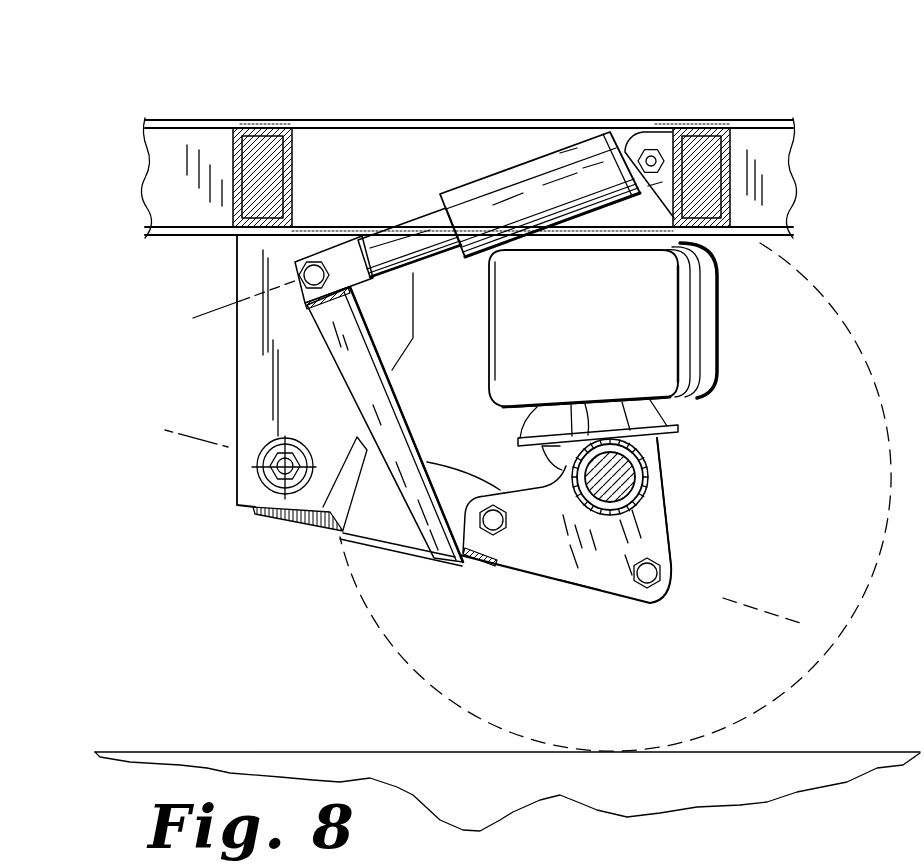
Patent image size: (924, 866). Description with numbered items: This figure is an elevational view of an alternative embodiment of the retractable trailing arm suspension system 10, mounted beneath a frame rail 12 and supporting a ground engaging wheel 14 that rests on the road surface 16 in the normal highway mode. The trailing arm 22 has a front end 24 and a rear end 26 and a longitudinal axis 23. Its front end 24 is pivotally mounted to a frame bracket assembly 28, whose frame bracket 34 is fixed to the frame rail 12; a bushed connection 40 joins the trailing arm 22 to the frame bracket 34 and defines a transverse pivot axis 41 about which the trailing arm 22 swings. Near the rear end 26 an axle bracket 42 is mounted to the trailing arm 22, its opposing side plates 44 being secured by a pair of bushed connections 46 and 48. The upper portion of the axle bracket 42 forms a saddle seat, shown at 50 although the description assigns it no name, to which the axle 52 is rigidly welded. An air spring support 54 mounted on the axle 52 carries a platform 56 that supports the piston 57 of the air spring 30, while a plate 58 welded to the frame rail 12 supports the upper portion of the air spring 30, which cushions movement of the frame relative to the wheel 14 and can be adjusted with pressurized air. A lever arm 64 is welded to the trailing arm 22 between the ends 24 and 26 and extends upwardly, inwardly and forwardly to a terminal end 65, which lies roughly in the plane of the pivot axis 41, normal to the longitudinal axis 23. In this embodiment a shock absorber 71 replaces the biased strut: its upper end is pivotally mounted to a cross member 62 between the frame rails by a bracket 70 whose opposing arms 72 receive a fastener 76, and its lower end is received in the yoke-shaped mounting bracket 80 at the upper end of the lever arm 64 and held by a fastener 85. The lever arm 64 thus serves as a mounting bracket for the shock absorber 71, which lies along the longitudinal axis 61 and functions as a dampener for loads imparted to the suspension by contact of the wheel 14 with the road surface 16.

The trailing arm suspension system 10 is at (82, 235).
The frame rail 12 is at (293, 113).
The ground engaging wheel 14 is at (815, 228).
The road surface 16 is at (797, 751).
The trailing arm 22 is at (453, 453).
The longitudinal axis of the trailing arm 23 is at (186, 440).
The front end 24 is at (273, 527).
The rear end 26 is at (590, 598).
The frame bracket assembly 28 is at (197, 421).
The air spring 30 is at (732, 320).
The frame bracket 34 is at (226, 386).
The bushed connection 40 is at (290, 443).
The pivot axis 41 is at (297, 470).
The axle bracket 42 is at (682, 547).
The side plates 44 is at (578, 590).
The bushed connection 46 is at (497, 563).
The bushed connection 48 is at (664, 588).
The bearing ring 50 is at (648, 518).
The axle 52 is at (646, 496).
The air spring support 54 is at (683, 458).
The platform 56 is at (577, 438).
The piston 57 is at (678, 421).
The plate 58 is at (708, 242).
The longitudinal axis of the strut 61 is at (195, 316).
The cross member 62 is at (292, 168).
The lever arm 64 is at (397, 423).
The terminal end 65 is at (272, 271).
The bracket 70 is at (658, 122).
The shock absorber 71 is at (500, 190).
The bracket arms 72 is at (662, 182).
The fastener 76 is at (654, 157).
The mounting bracket 80 is at (314, 302).
The fastener 85 is at (307, 259).